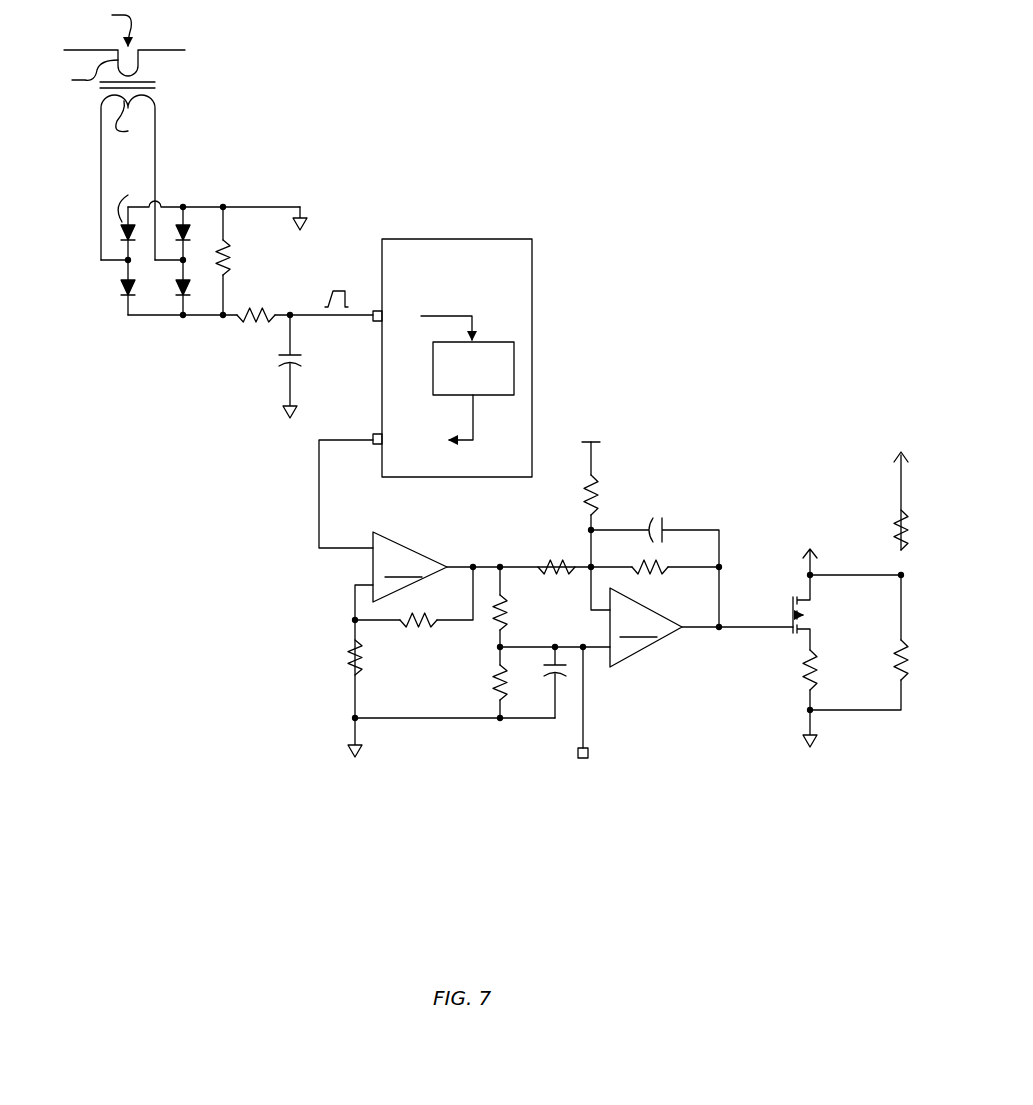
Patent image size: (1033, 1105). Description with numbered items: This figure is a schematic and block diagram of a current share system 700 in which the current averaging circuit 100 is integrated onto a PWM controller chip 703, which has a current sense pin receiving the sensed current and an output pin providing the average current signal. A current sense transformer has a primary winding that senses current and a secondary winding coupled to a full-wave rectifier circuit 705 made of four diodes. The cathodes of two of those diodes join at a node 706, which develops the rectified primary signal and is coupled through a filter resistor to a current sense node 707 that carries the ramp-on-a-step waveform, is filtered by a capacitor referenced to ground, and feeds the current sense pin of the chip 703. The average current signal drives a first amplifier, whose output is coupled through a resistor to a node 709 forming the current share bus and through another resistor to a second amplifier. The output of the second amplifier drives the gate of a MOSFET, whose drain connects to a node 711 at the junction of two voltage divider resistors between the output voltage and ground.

The current share system 700 is at (613, 186).
The PWM controller chip 703 is at (476, 274).
The current averaging circuit 100 is at (492, 386).
The full-wave rectifier circuit 705 is at (116, 337).
The node 706 is at (181, 320).
The current sense node 707 is at (289, 319).
The node forming the ISHARE BUS 709 is at (584, 649).
The node 711 is at (808, 573).